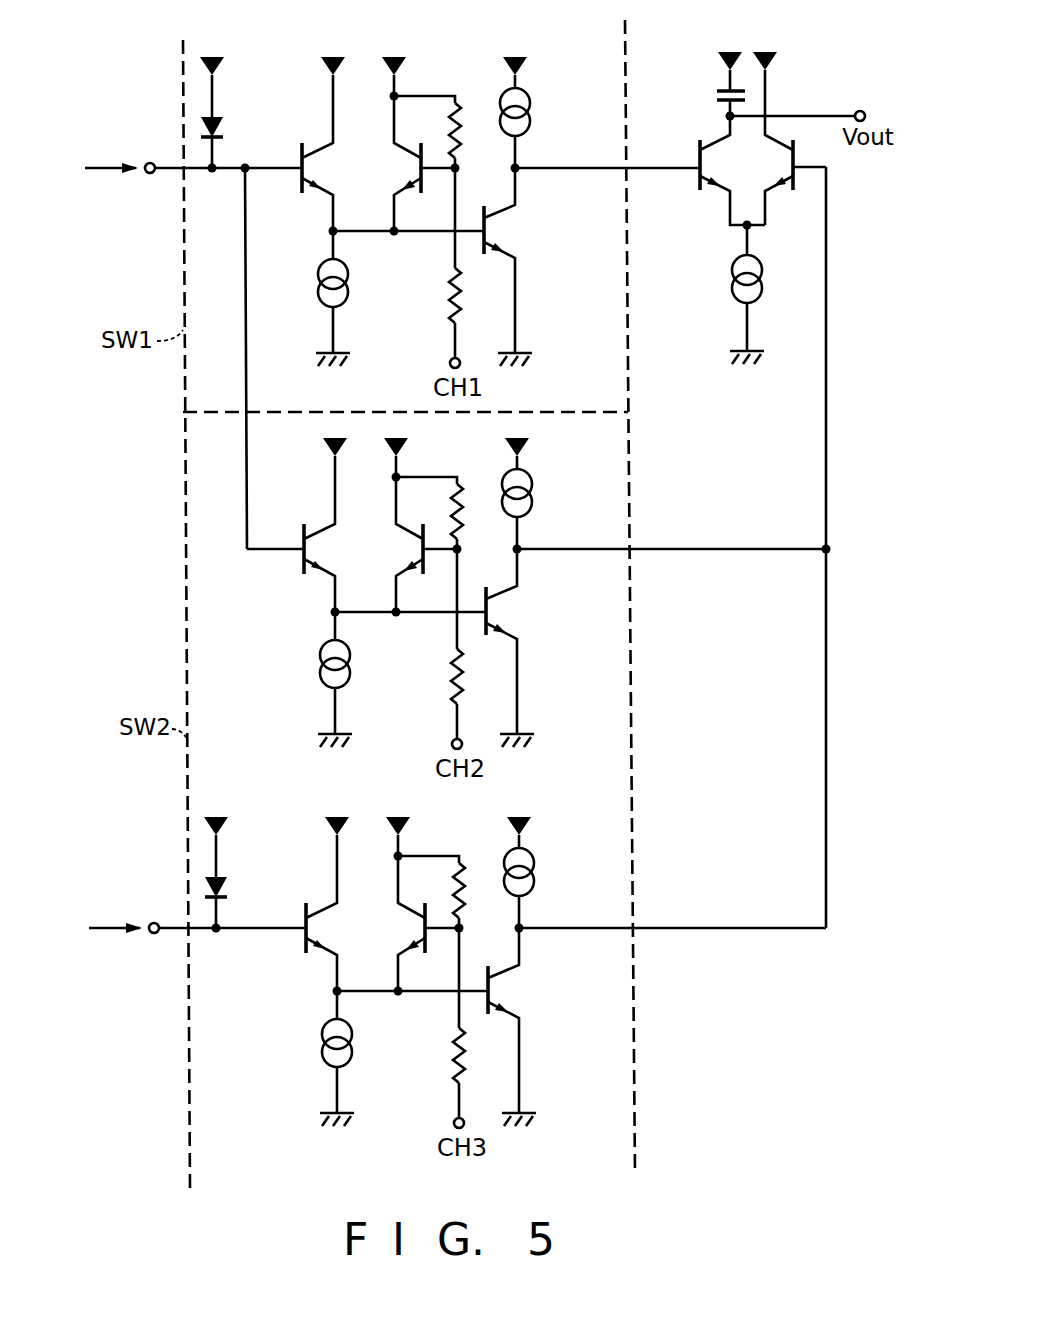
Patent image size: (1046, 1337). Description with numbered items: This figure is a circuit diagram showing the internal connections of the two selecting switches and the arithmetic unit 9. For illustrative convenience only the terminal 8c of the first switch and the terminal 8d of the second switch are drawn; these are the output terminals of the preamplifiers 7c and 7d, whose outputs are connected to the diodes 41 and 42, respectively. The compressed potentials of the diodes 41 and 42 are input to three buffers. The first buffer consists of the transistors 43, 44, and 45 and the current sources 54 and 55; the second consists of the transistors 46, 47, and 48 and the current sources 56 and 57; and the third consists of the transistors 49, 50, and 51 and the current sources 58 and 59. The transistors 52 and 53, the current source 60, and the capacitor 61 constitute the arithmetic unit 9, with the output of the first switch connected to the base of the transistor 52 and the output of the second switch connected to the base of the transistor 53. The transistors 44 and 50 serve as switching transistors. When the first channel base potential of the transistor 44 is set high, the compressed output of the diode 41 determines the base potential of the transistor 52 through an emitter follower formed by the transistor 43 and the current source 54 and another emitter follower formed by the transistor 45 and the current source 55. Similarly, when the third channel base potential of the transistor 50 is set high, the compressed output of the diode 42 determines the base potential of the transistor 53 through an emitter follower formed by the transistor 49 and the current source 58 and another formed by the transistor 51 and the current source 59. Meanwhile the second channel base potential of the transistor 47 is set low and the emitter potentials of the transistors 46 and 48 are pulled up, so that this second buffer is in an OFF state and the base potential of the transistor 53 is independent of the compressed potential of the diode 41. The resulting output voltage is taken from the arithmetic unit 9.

The preamplifier 7c is at (88, 172).
The terminal 8c is at (145, 146).
The preamplifier 7d is at (92, 930).
The terminal 8d is at (150, 916).
The arithmetic unit 9 is at (771, 72).
The diode 41 is at (216, 138).
The diode 42 is at (237, 875).
The transistor 43 is at (320, 169).
The transistor 44 is at (409, 173).
The transistor 45 is at (500, 233).
The transistor 46 is at (335, 525).
The transistor 47 is at (415, 543).
The transistor 48 is at (522, 648).
The transistor 49 is at (337, 904).
The transistor 50 is at (416, 922).
The transistor 51 is at (530, 1027).
The transistor 52 is at (712, 190).
The transistor 53 is at (780, 188).
The current source 54 is at (350, 292).
The current source 55 is at (533, 118).
The current source 56 is at (354, 678).
The current source 57 is at (541, 496).
The current source 58 is at (356, 1057).
The current source 59 is at (543, 875).
The current source 60 is at (730, 275).
The capacitor 61 is at (717, 91).